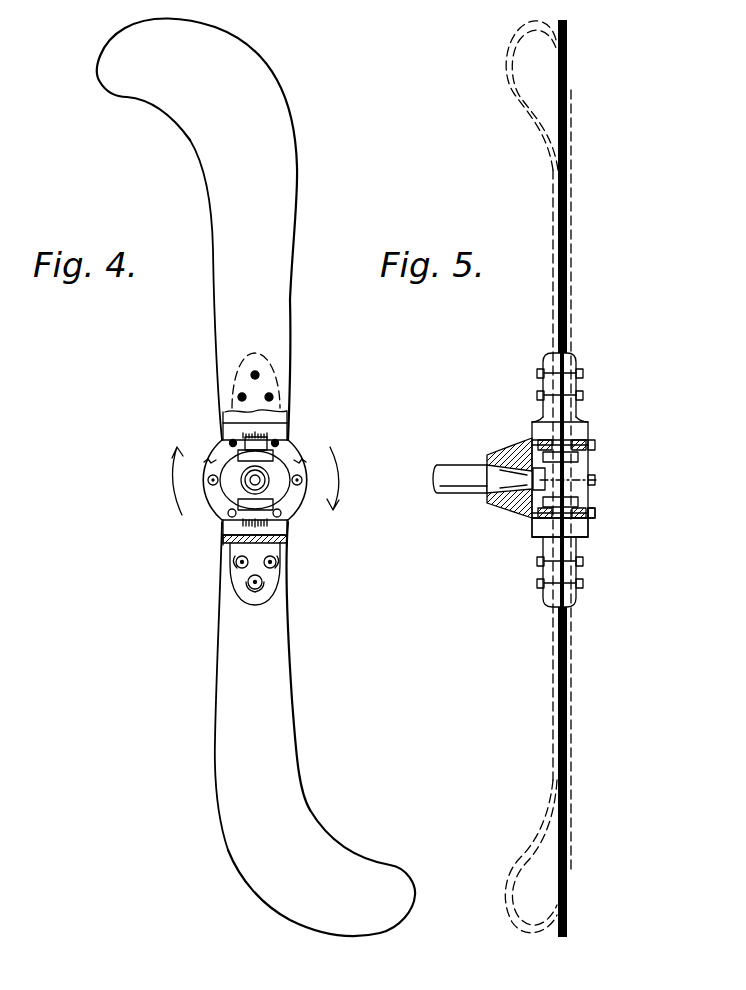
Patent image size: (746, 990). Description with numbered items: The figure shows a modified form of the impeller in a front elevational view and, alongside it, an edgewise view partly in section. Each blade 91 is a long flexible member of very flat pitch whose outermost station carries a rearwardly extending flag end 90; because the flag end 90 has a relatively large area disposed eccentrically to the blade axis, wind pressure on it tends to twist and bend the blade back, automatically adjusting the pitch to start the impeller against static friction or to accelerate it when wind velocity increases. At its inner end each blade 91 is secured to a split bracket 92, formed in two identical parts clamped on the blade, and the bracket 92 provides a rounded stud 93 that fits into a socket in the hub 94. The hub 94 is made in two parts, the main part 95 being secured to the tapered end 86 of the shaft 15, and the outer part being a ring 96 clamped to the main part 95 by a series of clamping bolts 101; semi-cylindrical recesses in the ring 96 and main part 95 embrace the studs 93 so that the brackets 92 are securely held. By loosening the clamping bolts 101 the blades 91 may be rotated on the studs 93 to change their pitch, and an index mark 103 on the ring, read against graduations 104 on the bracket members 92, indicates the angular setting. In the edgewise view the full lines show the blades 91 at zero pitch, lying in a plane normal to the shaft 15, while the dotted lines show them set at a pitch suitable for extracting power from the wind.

In FIG. 5, the shaft 15 is at (465, 486).
In FIG. 5, the tapered end of the shaft 86 is at (492, 454).
In FIG. 4, the flag end 90 is at (145, 75).
In FIG. 4, the blade 91 is at (304, 203).
In FIG. 5, the blade 91 is at (563, 235).
In FIG. 4, the split bracket 92 is at (270, 545).
In FIG. 4, the rounded stud 93 is at (263, 447).
In FIG. 4, the hub 94 is at (340, 457).
In FIG. 5, the main part of the hub 95 is at (533, 516).
In FIG. 5, the ring member 96 is at (591, 518).
In FIG. 5, the clamping bolts 101 is at (594, 512).
In FIG. 4, the index mark 103 is at (231, 511).
In FIG. 4, the graduations 104 is at (240, 538).